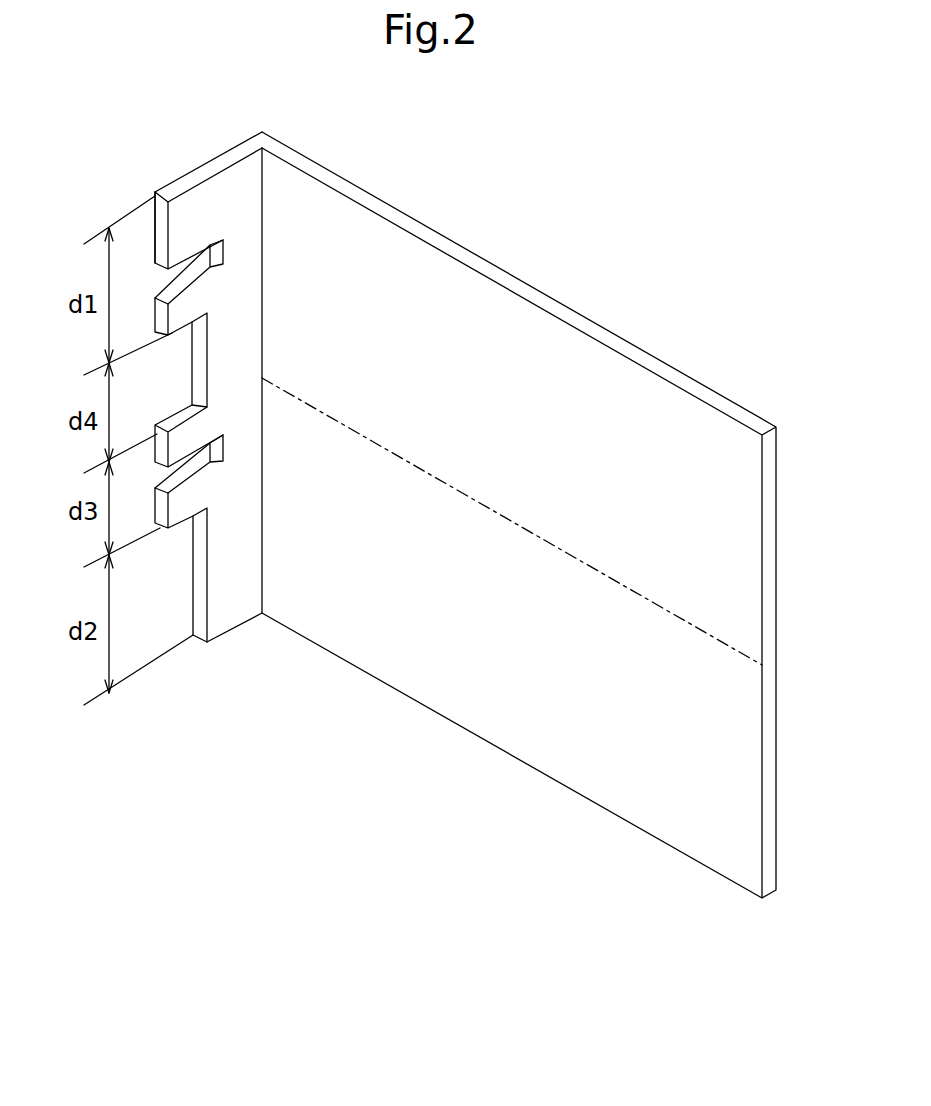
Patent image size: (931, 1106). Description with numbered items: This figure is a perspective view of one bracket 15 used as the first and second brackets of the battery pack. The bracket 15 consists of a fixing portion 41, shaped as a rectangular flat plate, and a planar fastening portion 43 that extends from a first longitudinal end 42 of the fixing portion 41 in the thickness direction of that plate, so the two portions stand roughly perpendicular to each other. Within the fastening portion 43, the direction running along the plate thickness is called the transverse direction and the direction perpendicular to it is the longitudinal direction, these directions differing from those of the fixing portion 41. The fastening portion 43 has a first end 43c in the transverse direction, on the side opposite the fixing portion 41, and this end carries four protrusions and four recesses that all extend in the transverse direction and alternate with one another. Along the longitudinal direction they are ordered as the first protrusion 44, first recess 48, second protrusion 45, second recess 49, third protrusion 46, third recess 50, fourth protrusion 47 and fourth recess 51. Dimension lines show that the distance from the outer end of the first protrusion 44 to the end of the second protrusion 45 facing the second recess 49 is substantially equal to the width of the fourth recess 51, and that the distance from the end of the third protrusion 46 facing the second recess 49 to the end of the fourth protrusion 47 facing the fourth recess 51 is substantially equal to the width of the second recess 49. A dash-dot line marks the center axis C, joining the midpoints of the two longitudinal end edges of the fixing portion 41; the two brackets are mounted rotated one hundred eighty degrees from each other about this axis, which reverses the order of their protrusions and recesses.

The bracket 15 is at (80, 132).
The fixing portion 41 is at (780, 551).
The first longitudinal end 42 is at (262, 170).
The fastening portion 43 is at (238, 627).
The first end 43c is at (157, 233).
The first protrusion 44 is at (180, 228).
The second protrusion 45 is at (176, 320).
The third protrusion 46 is at (160, 443).
The fourth protrusion 47 is at (160, 510).
The first recess 48 is at (218, 250).
The second recess 49 is at (201, 352).
The third recess 50 is at (212, 445).
The fourth recess 51 is at (198, 550).
The center axis C is at (510, 521).